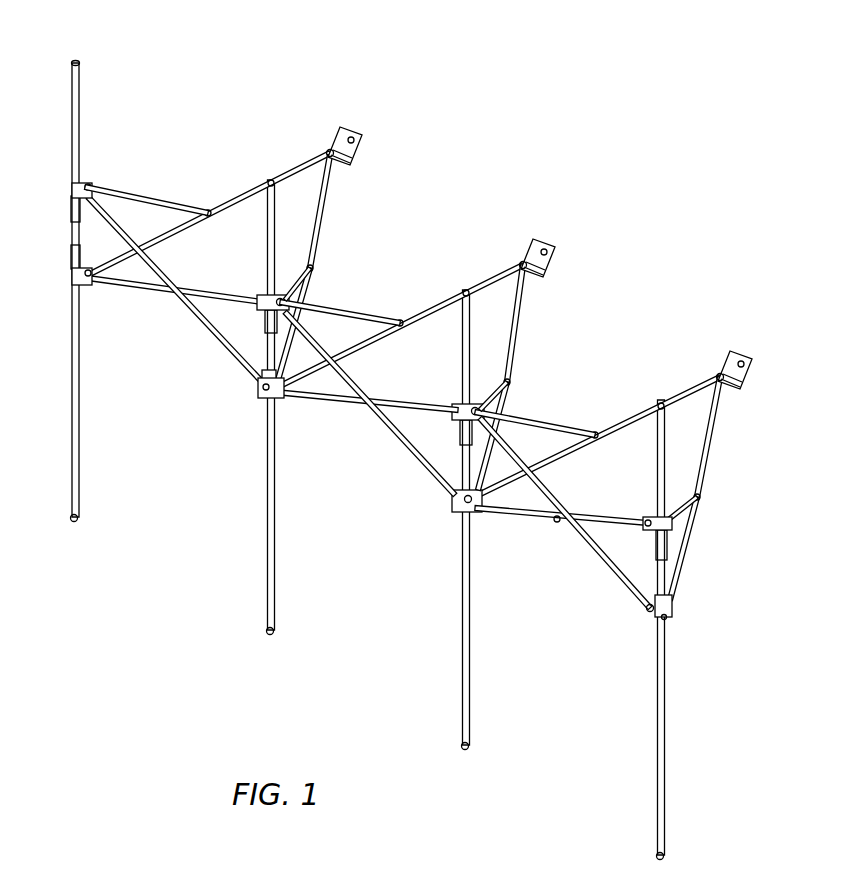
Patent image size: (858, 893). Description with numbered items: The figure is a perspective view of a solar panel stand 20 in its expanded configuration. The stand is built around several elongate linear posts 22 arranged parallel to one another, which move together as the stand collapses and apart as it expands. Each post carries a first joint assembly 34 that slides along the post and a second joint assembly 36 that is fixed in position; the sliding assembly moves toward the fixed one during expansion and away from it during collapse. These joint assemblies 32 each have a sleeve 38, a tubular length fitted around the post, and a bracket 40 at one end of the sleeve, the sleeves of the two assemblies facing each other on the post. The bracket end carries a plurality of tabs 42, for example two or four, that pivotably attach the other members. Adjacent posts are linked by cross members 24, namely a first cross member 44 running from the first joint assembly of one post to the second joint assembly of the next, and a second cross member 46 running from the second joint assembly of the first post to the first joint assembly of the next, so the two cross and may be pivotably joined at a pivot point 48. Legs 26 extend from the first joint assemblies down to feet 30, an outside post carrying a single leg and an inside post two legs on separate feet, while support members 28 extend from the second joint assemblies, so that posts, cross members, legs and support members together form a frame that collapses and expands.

The solar panel stand 20 is at (695, 245).
The elongate linear post 22 is at (270, 580).
The cross member 24 is at (540, 517).
The leg 26 is at (528, 310).
The support member 28 is at (550, 423).
The foot 30 is at (748, 355).
The joint assembly 32 is at (683, 593).
The first joint assembly 34 is at (663, 617).
The second joint assembly 36 is at (665, 540).
The sleeve 38 is at (262, 375).
The bracket 40 is at (267, 390).
The tab 42 is at (83, 290).
The first cross member 44 is at (415, 460).
The second cross member 46 is at (343, 405).
The pivot point 48 is at (557, 524).